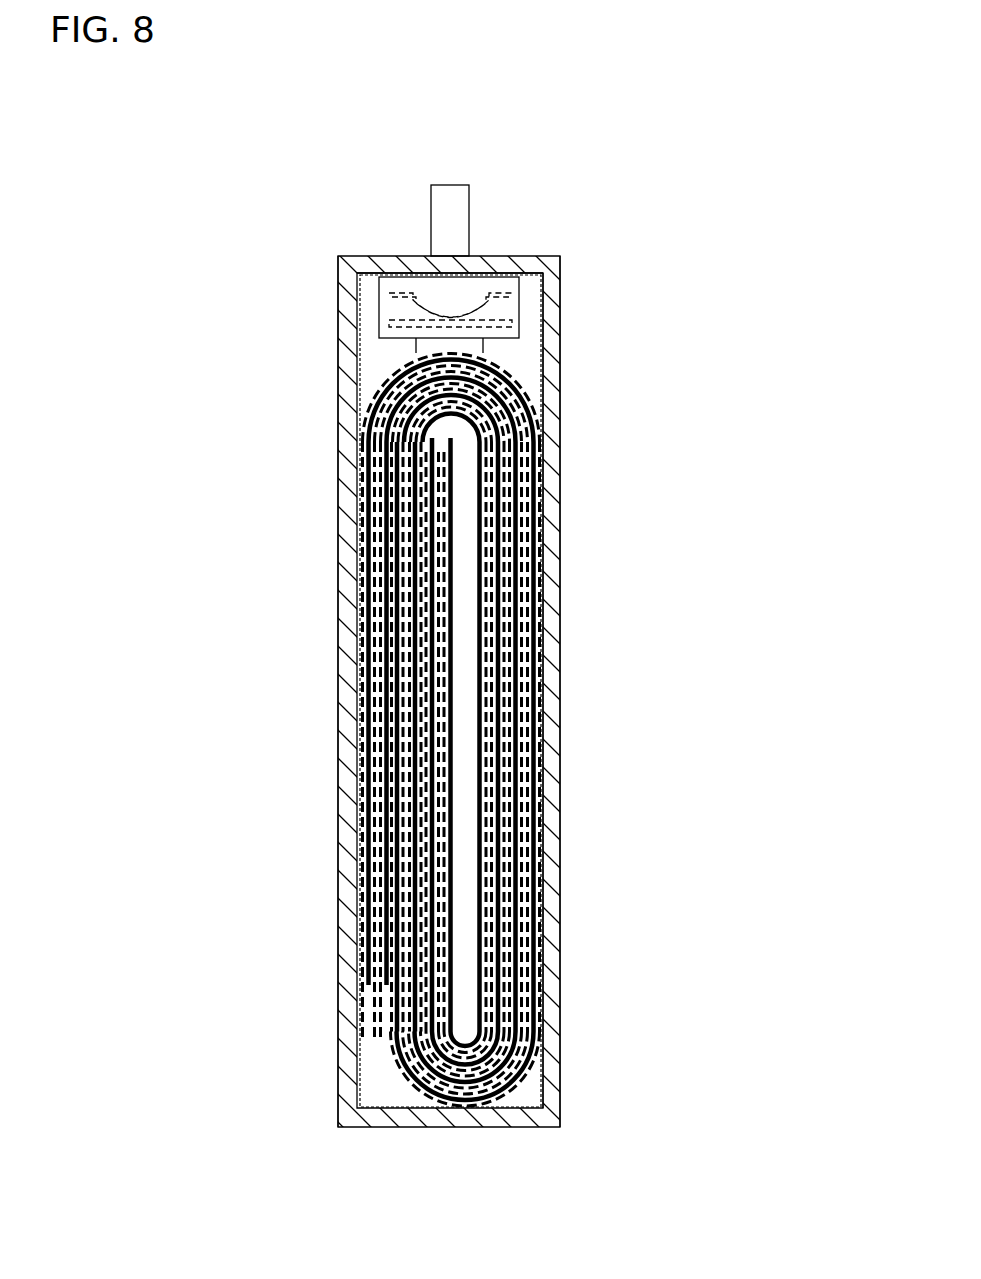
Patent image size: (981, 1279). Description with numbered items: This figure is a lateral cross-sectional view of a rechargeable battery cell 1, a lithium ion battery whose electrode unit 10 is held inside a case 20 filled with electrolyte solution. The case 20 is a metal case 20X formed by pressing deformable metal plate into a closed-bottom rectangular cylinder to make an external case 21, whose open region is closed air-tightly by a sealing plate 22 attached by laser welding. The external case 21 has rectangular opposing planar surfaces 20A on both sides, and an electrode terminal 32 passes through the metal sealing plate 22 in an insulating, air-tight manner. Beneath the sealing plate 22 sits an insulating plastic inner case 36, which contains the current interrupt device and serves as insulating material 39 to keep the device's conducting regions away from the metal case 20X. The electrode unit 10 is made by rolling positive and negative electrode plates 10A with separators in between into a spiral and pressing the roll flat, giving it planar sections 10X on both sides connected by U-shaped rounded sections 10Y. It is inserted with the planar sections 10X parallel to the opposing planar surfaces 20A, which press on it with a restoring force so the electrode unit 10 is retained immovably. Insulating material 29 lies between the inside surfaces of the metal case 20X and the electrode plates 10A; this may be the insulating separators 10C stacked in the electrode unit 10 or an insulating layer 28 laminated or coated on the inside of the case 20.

The battery cell 1 is at (640, 824).
The electrode unit 10 is at (208, 768).
The electrode plate 10A is at (368, 832).
The insulating separator 10C is at (516, 386).
The planar section 10X is at (346, 706).
The U-shaped rounded section 10Y is at (346, 374).
The case 20 is at (468, 659).
The metal case 20X is at (640, 192).
The opposing planar surfaces 20A is at (327, 654).
The external case 21 is at (548, 352).
The sealing plate 22 is at (512, 267).
The insulating layer 28 is at (491, 706).
The insulating material 29 is at (543, 399).
The electrode terminal 32 is at (458, 213).
The inner case 36 is at (368, 311).
The insulating material 39 is at (390, 282).